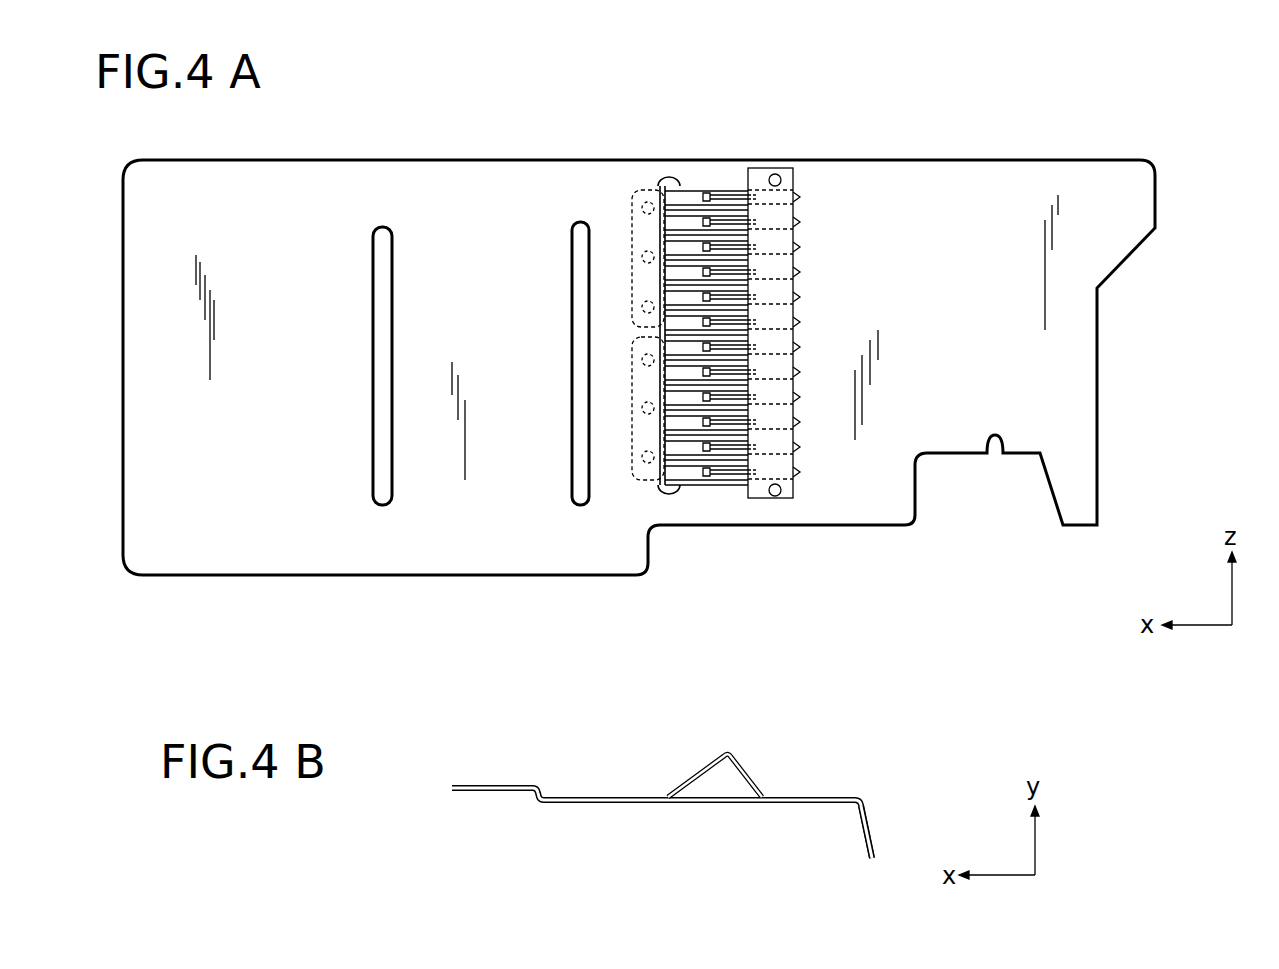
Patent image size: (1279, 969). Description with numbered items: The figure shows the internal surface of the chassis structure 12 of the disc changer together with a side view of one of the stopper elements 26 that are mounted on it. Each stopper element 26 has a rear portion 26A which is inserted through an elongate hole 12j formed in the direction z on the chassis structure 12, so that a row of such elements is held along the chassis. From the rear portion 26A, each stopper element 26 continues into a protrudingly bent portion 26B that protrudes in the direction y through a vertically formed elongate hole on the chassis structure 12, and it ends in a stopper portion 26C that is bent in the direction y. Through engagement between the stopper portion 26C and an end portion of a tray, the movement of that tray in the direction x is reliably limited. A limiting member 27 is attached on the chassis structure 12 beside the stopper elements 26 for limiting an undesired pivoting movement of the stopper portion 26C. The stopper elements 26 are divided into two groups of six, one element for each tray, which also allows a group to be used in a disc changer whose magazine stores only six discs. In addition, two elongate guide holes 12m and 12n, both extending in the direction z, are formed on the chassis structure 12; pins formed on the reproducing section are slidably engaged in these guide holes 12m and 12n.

In FIG. 4A, the chassis structure 12 is at (541, 160).
In FIG. 4A, the elongate hole 12j is at (668, 180).
In FIG. 4A, the elongate guide hole 12m is at (383, 335).
In FIG. 4A, the elongate guide hole 12n is at (578, 350).
In FIG. 4A, the stopper element 26 is at (722, 329).
In FIG. 4B, the stopper element 26 is at (714, 772).
In FIG. 4A, the rear portion 26A is at (643, 228).
In FIG. 4B, the rear portion 26A is at (501, 783).
In FIG. 4A, the protrudingly bent portion 26B is at (733, 477).
In FIG. 4B, the protrudingly bent portion 26B is at (717, 752).
In FIG. 4A, the stopper portion 26C is at (800, 196).
In FIG. 4B, the stopper portion 26C is at (873, 837).
In FIG. 4A, the limiting member 27 is at (793, 172).